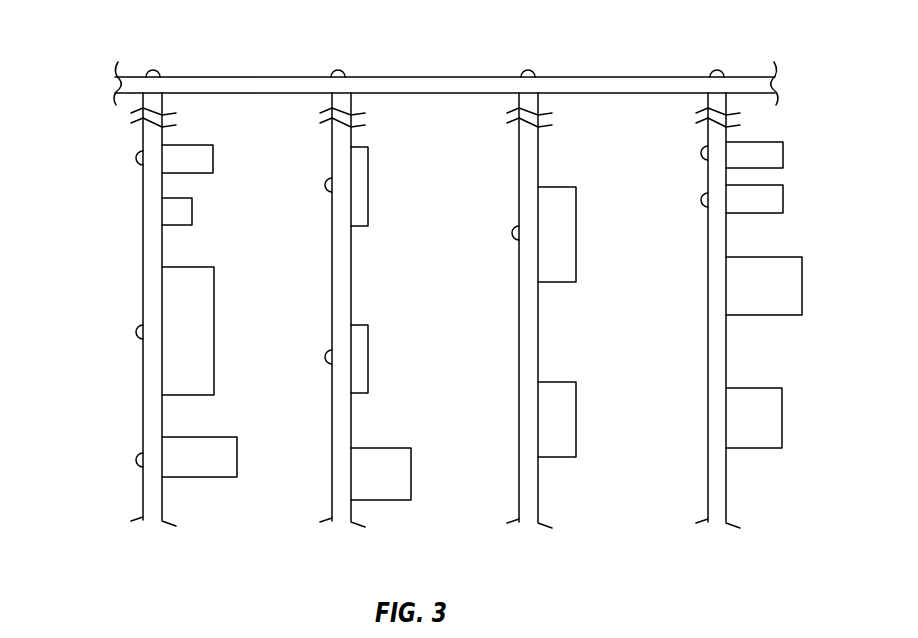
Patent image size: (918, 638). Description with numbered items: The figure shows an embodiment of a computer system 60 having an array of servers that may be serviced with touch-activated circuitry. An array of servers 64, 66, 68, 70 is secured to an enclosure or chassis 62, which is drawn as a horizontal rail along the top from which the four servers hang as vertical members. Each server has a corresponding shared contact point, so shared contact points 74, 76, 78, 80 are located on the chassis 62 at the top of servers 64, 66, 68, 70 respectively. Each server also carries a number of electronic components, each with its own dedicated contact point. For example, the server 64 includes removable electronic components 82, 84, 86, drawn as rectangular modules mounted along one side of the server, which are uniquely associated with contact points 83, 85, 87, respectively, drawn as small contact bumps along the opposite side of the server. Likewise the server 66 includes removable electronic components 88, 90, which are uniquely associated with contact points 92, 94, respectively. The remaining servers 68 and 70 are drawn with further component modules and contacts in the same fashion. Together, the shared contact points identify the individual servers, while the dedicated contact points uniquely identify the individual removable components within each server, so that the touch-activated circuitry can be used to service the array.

The computer system 60 is at (432, 44).
The enclosure or chassis 62 is at (617, 90).
The server 64 is at (153, 528).
The server 66 is at (342, 528).
The server 68 is at (526, 528).
The server 70 is at (716, 528).
The shared contact point 74 is at (158, 70).
The shared contact point 76 is at (344, 70).
The shared contact point 78 is at (532, 70).
The shared contact point 80 is at (719, 70).
The removable electronic component 82 is at (210, 166).
The contact point 83 is at (137, 158).
The removable electronic component 84 is at (200, 298).
The contact point 85 is at (137, 332).
The removable electronic component 86 is at (232, 463).
The contact point 87 is at (137, 460).
The removable electronic component 88 is at (363, 189).
The removable electronic component 90 is at (361, 364).
The contact point 92 is at (326, 188).
The contact point 94 is at (326, 357).